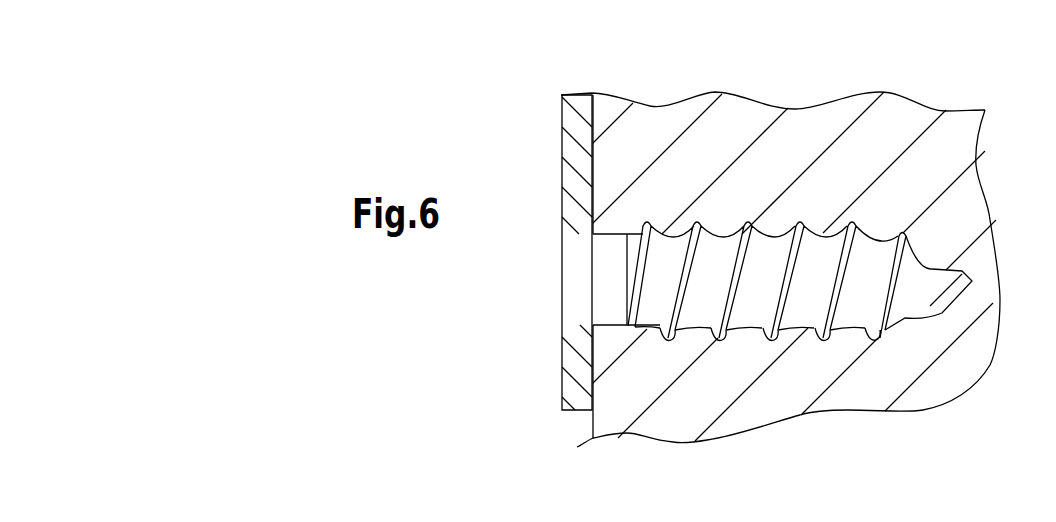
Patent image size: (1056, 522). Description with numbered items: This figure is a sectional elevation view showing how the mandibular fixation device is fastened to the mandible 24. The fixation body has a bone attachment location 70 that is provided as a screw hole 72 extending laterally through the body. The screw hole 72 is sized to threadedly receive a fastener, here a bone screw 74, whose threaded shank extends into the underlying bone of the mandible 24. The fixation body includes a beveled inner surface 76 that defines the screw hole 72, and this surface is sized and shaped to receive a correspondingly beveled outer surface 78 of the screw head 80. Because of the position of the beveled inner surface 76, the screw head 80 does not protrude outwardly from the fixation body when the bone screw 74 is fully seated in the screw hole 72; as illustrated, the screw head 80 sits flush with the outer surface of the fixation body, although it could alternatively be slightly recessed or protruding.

The mandible 24 is at (733, 128).
The bone attachment location 70 is at (562, 144).
The screw hole 72 is at (577, 230).
The bone screw 74 is at (708, 325).
The beveled inner surface 76 is at (572, 368).
The beveled outer surface 78 is at (570, 366).
The screw head 80 is at (562, 283).